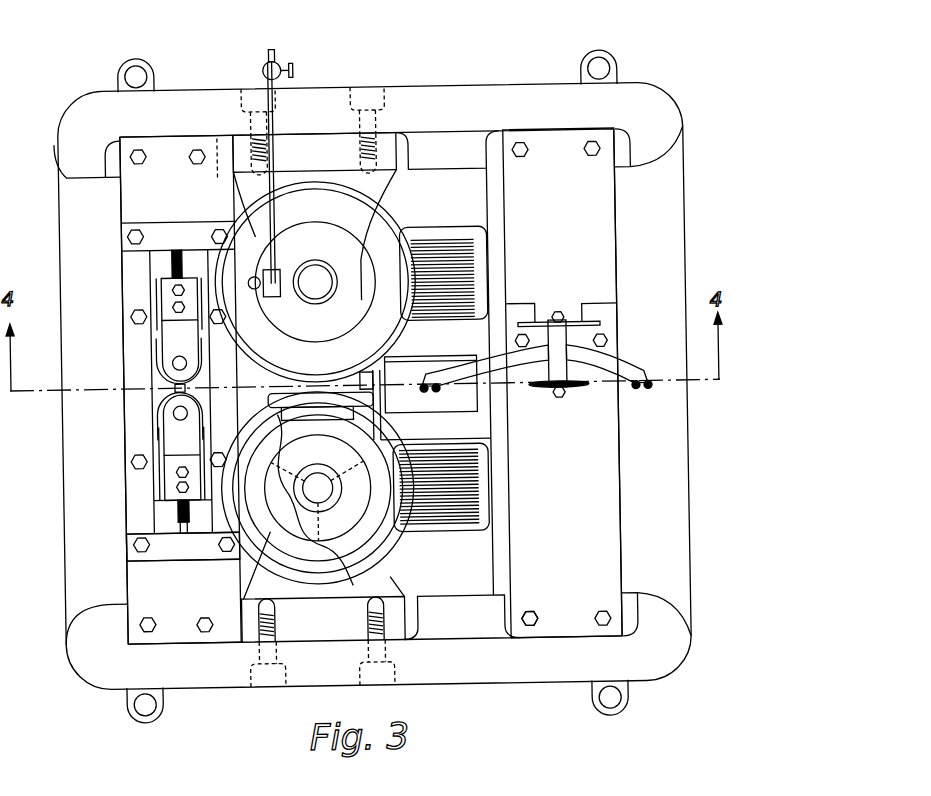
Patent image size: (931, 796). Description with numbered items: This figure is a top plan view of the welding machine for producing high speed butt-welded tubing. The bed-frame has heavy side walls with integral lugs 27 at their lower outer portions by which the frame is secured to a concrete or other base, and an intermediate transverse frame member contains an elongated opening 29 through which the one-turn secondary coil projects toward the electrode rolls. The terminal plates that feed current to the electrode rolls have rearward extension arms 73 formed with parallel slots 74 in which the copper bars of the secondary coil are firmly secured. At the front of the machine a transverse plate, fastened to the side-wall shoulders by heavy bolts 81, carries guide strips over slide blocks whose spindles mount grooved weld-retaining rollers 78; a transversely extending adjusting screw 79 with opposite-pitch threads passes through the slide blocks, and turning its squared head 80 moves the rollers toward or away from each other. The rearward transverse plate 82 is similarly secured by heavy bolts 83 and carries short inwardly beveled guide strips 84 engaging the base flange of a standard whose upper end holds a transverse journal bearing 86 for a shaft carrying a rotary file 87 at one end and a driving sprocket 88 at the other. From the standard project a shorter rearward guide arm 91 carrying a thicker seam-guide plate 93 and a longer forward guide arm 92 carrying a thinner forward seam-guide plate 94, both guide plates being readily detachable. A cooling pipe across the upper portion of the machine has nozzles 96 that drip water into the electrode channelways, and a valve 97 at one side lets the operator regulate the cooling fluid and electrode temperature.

The integral lugs 27 is at (618, 60).
The elongated opening 29 is at (443, 229).
The extension arms 73 is at (385, 527).
The parallel slots 74 is at (465, 525).
The grooved weld-retaining roller 78 is at (160, 374).
The adjusting screw 79 is at (171, 507).
The squared head 80 is at (173, 519).
The heavy bolts 81 is at (139, 626).
The rearward transverse plate 82 is at (622, 571).
The heavy bolts 83 is at (526, 623).
The guide strips 84 is at (537, 308).
The transverse journal bearing 86 is at (582, 372).
The rotary file 87 is at (583, 378).
The driving sprocket 88 is at (578, 325).
The rearward guide arm 91 is at (633, 367).
The forward guide arm 92 is at (461, 357).
The seam-guide plate 93 is at (649, 386).
The forward seam-guide plate 94 is at (443, 383).
The nozzles 96 is at (264, 281).
The valve 97 is at (283, 67).